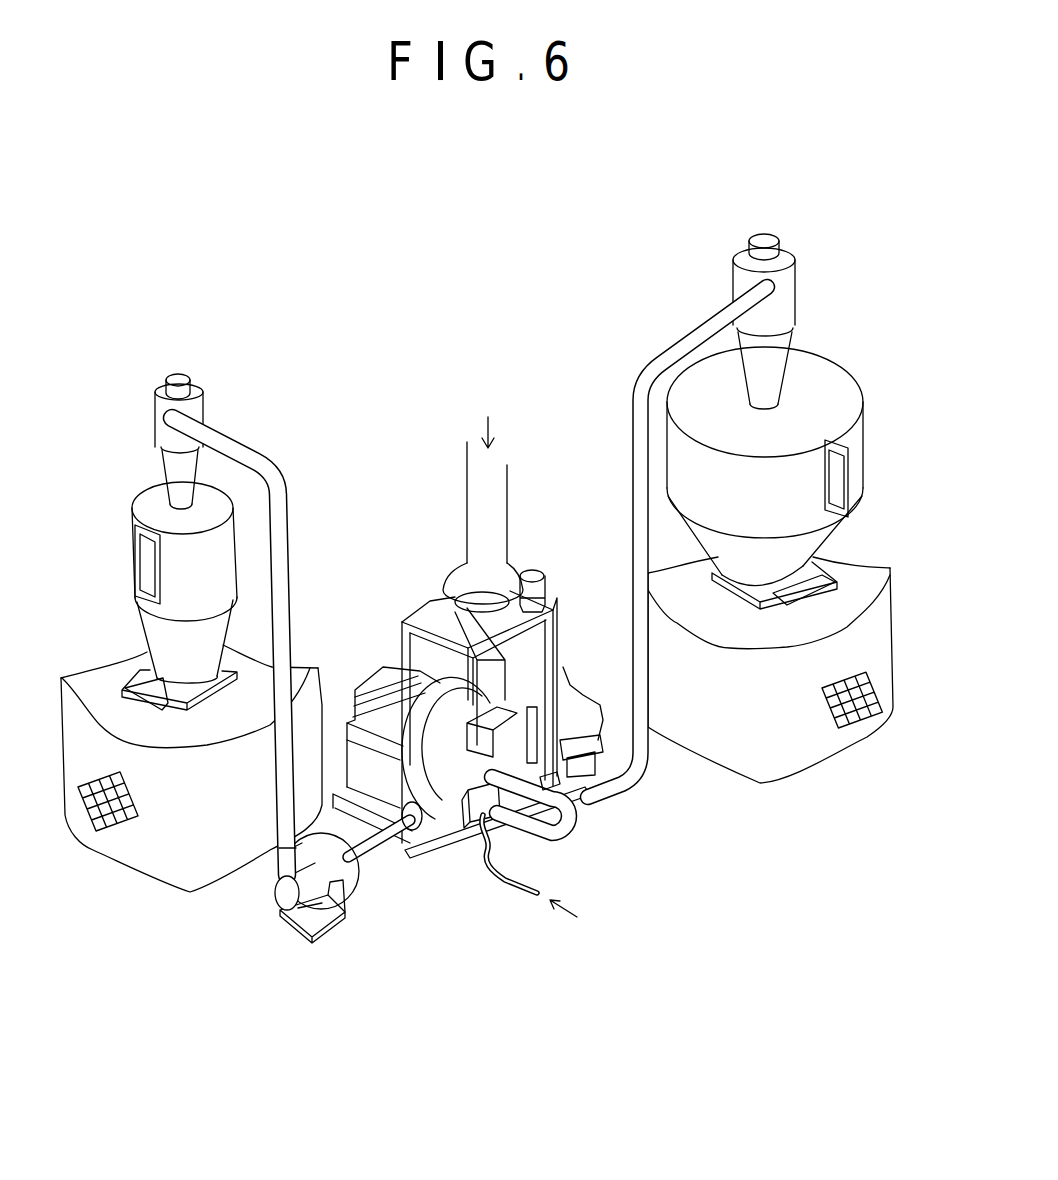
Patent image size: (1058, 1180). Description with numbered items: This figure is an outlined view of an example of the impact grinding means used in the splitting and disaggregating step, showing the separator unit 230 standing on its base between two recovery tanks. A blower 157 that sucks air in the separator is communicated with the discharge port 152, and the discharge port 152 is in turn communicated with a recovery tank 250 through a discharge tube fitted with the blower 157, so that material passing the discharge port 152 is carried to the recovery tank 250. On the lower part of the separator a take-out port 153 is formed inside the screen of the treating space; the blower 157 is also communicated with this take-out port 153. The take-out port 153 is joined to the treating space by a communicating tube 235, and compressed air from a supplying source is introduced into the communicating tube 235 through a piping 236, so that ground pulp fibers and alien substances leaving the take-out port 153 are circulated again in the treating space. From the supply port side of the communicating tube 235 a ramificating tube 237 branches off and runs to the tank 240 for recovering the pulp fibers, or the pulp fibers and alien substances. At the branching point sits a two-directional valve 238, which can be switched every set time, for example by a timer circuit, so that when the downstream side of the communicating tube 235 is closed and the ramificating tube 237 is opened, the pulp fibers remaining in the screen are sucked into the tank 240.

The discharge port 152 is at (417, 857).
The take-out port 153 is at (483, 822).
The blower 157 is at (357, 895).
The grinding unit 230 is at (447, 820).
The communicating tube 235 is at (577, 825).
The piping 236 is at (507, 875).
The ramificating tube 237 is at (637, 447).
The two-directional valve 238 is at (597, 788).
The tank 240 is at (867, 420).
The recovery tank 250 is at (130, 522).